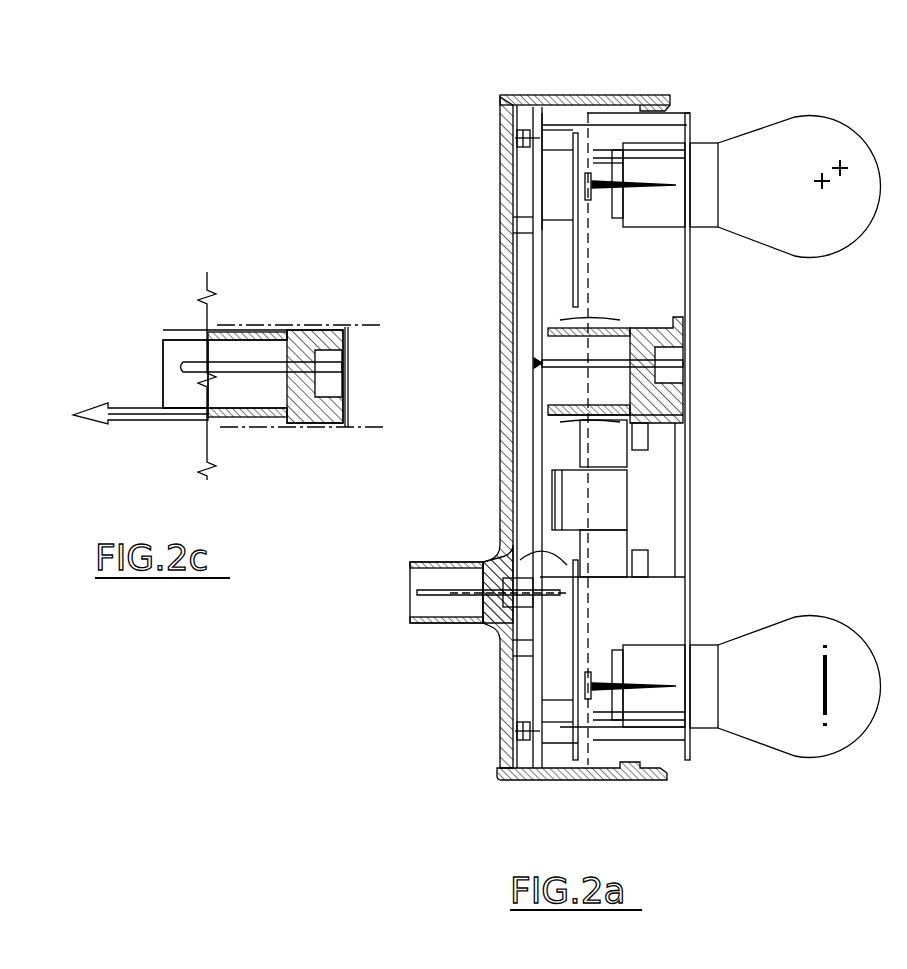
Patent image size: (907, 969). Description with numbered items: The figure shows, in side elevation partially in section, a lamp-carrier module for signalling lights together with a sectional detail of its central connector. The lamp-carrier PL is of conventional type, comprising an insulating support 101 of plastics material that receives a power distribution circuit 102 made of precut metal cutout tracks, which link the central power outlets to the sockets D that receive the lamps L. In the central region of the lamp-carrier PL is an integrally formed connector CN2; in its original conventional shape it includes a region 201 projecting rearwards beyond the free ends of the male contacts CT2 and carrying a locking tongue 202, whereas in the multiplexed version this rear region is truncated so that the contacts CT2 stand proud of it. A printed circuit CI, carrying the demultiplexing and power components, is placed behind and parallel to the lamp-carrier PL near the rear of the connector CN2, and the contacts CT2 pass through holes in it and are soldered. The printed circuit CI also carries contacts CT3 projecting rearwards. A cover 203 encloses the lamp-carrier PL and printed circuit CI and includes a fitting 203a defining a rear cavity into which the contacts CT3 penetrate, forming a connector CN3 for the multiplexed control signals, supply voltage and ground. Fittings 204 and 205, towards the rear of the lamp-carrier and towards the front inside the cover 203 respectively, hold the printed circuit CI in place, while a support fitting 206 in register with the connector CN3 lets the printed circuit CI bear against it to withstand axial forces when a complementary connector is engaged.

In FIG. 2a, the insulating support 101 is at (672, 752).
In FIG. 2a, the power distribution circuit 102 is at (691, 480).
In FIG. 2c, the rearward projecting region 201 is at (168, 388).
In FIG. 2c, the locking tongue 202 is at (110, 425).
In FIG. 2a, the cover 203 is at (506, 503).
In FIG. 2a, the fitting 203a is at (480, 627).
In FIG. 2a, the fitting 204 is at (560, 137).
In FIG. 2a, the fitting 205 is at (520, 223).
In FIG. 2a, the support fitting 206 is at (567, 565).
In FIG. 2a, the connector CN2 is at (620, 398).
In FIG. 2c, the connector CN2 is at (305, 330).
In FIG. 2a, the connector CN3 is at (433, 607).
In FIG. 2a, the male contacts CT2 is at (565, 362).
In FIG. 2c, the male contacts CT2 is at (250, 372).
In FIG. 2a, the contacts CT3 is at (458, 618).
In FIG. 2a, the printed circuit CI is at (533, 457).
In FIG. 2a, the lamp-carrier PL is at (660, 290).
In FIG. 2a, the sockets D is at (664, 170).
In FIG. 2a, the lamps L is at (820, 243).